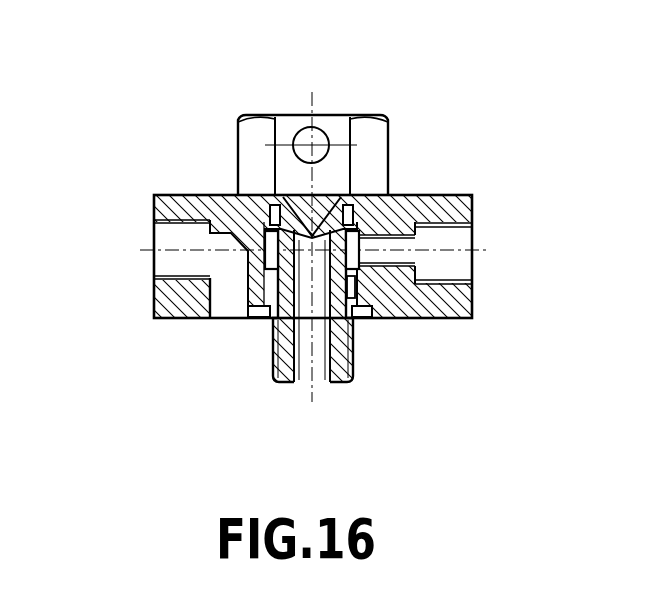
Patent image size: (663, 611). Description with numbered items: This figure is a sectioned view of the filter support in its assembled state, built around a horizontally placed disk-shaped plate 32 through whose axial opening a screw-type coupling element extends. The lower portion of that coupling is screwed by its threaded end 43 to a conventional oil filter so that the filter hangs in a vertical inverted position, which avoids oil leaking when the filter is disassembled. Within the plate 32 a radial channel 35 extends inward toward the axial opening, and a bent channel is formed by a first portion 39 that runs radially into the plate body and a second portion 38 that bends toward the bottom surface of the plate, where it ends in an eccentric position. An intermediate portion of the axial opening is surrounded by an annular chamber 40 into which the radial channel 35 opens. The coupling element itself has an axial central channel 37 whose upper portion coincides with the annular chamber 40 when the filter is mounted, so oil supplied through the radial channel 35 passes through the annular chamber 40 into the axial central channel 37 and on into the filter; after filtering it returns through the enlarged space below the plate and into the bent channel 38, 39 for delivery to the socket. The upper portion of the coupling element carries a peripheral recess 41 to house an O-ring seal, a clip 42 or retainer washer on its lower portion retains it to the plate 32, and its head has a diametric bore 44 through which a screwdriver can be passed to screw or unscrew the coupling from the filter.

The disk-shaped plate 32 is at (428, 194).
The radial channel 35 is at (462, 240).
The axial central channel 37 is at (317, 365).
The bent channel second portion 38 is at (230, 290).
The bent channel first portion 39 is at (177, 232).
The annular chamber 40 is at (410, 320).
The peripheral recess 41 is at (268, 180).
The clip 42 is at (365, 322).
The threaded end 43 is at (273, 345).
The diametric bore 44 is at (318, 148).